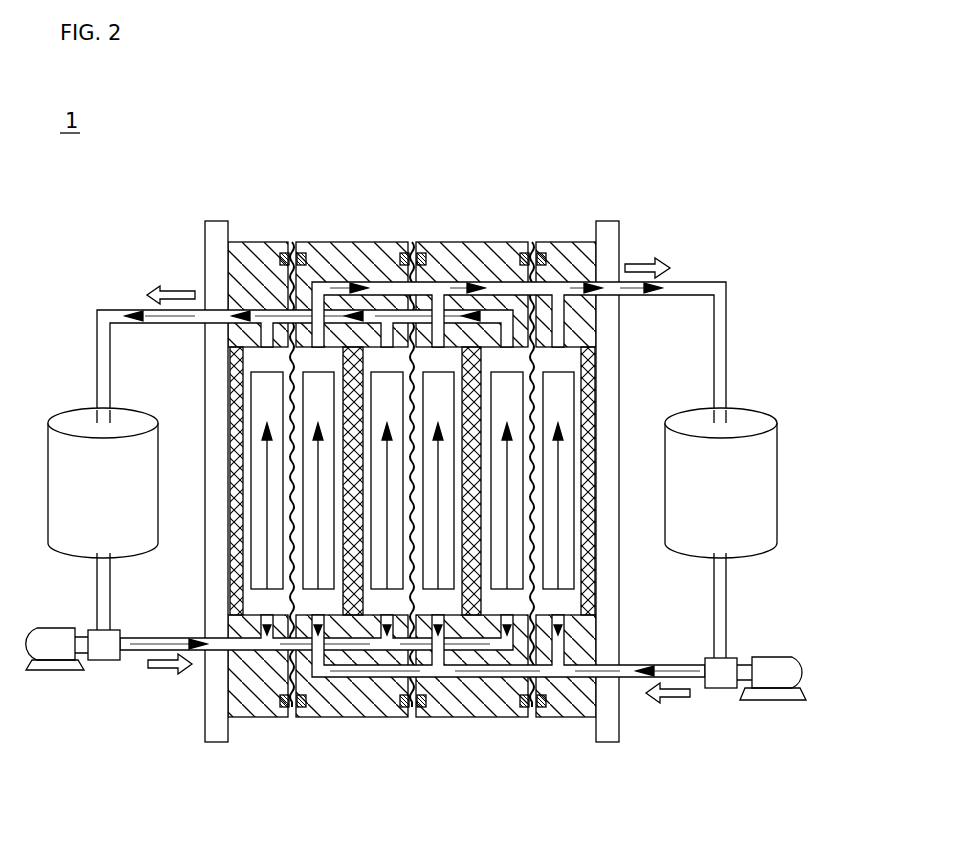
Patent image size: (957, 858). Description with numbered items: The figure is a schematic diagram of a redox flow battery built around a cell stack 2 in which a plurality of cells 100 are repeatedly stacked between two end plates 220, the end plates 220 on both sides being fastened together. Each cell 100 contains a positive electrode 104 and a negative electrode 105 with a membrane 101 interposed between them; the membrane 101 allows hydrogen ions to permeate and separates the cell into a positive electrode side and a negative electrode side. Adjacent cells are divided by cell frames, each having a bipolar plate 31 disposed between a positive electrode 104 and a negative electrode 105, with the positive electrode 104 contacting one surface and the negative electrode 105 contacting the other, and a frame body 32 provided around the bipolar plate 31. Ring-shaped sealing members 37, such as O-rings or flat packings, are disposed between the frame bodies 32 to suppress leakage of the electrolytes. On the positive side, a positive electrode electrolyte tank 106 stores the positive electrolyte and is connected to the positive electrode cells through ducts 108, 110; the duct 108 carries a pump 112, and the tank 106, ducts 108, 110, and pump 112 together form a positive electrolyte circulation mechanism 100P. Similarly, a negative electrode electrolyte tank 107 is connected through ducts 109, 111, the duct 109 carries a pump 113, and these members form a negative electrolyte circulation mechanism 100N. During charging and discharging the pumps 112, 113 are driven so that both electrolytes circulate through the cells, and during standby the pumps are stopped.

The cell stack 2 is at (606, 192).
The bipolar plate 31 is at (352, 355).
The frame body 32 is at (252, 242).
The sealing member 37 is at (301, 253).
The cell 100 is at (523, 796).
The membrane 101 is at (292, 717).
The positive electrode 104 is at (385, 560).
The negative electrode 105 is at (437, 600).
The positive electrode electrolyte tank 106 is at (84, 410).
The negative electrode electrolyte tank 107 is at (762, 410).
The duct 108 is at (135, 650).
The duct 109 is at (688, 677).
The duct 110 is at (106, 305).
The duct 111 is at (720, 282).
The pump 112 is at (42, 630).
The pump 113 is at (775, 658).
The positive electrolyte circulation mechanism 100P is at (84, 686).
The negative electrolyte circulation mechanism 100N is at (739, 701).
The end plate 220 is at (214, 728).